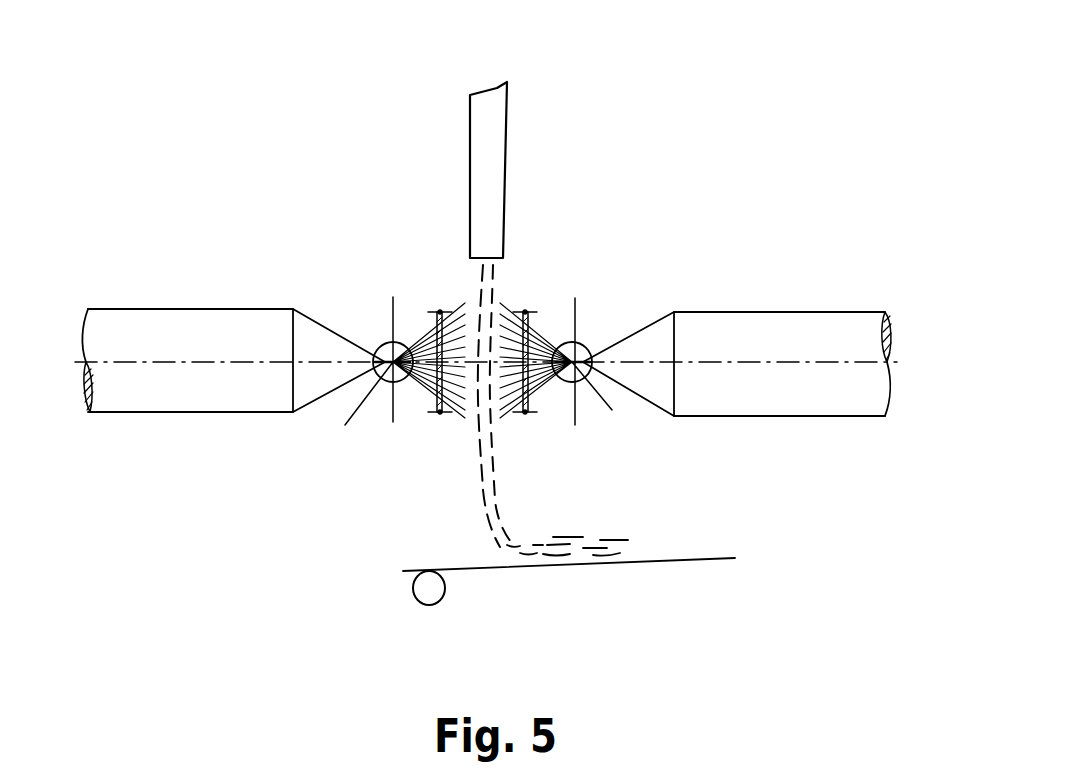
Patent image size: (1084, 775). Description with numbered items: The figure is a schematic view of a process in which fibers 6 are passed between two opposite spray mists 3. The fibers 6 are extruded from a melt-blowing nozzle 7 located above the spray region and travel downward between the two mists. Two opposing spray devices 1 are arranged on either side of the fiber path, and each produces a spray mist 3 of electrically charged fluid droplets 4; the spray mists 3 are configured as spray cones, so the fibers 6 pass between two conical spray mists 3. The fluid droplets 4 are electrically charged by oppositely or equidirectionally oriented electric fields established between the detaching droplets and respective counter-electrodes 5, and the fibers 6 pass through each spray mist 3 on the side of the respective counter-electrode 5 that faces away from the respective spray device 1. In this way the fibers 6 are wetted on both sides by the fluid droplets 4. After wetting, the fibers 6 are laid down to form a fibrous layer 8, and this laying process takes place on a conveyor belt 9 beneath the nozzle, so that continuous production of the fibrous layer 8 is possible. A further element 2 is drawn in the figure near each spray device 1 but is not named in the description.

The spray device 1 is at (148, 398).
The lamp 2 is at (390, 346).
The spray mist 3 is at (426, 341).
The fluid droplets 4 is at (418, 387).
The counter-electrode 5 is at (527, 312).
The fibers 6 is at (497, 462).
The melt-blowing nozzle 7 is at (481, 118).
The fibrous layer 8 is at (608, 535).
The conveyor belt 9 is at (410, 565).